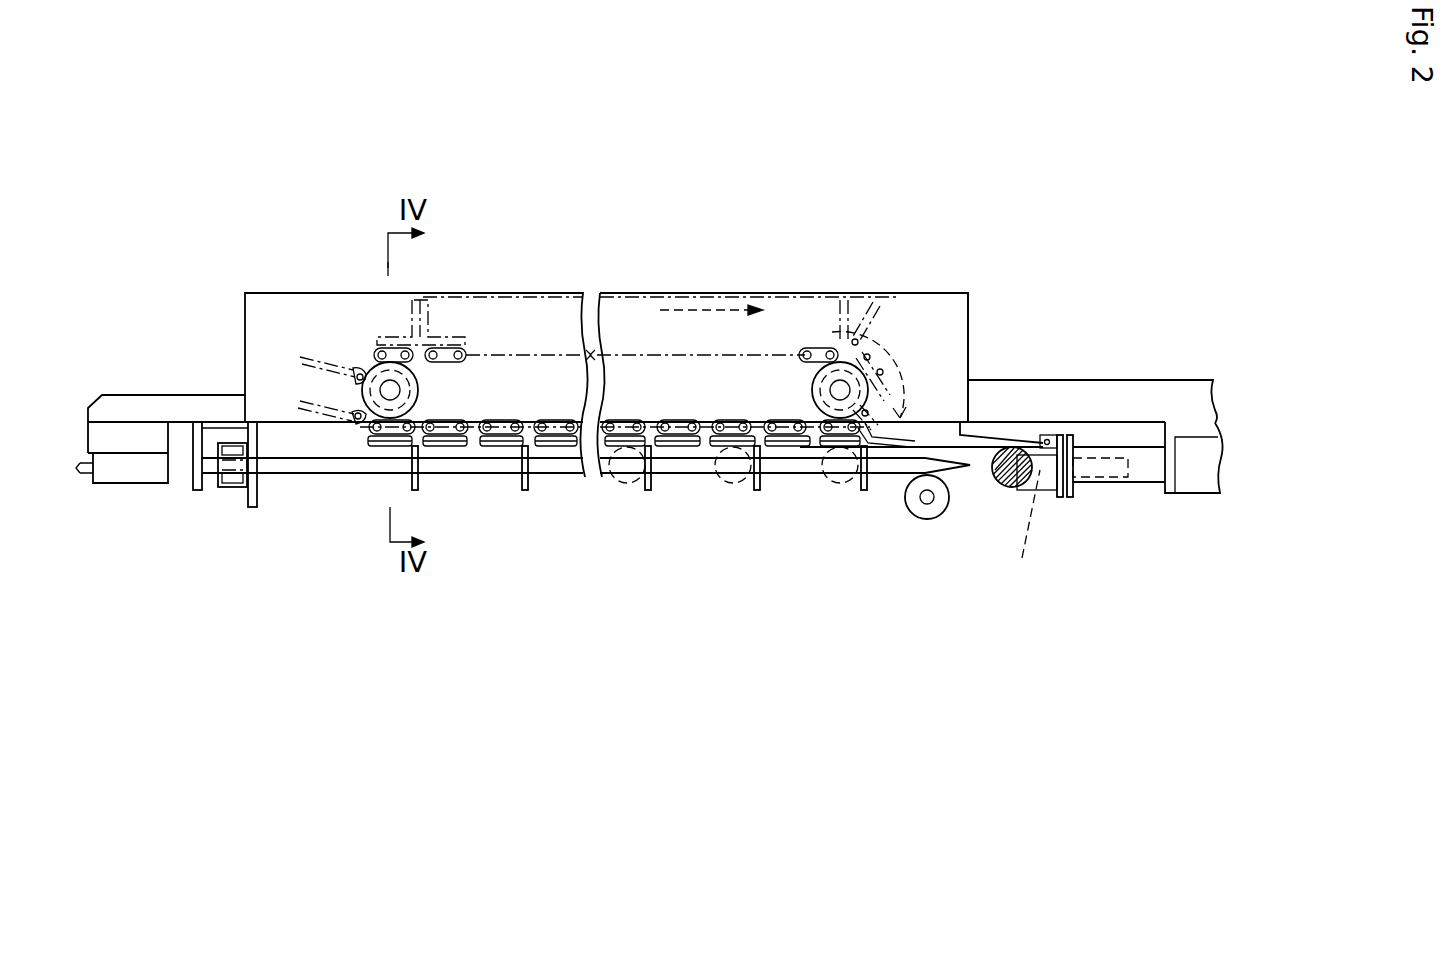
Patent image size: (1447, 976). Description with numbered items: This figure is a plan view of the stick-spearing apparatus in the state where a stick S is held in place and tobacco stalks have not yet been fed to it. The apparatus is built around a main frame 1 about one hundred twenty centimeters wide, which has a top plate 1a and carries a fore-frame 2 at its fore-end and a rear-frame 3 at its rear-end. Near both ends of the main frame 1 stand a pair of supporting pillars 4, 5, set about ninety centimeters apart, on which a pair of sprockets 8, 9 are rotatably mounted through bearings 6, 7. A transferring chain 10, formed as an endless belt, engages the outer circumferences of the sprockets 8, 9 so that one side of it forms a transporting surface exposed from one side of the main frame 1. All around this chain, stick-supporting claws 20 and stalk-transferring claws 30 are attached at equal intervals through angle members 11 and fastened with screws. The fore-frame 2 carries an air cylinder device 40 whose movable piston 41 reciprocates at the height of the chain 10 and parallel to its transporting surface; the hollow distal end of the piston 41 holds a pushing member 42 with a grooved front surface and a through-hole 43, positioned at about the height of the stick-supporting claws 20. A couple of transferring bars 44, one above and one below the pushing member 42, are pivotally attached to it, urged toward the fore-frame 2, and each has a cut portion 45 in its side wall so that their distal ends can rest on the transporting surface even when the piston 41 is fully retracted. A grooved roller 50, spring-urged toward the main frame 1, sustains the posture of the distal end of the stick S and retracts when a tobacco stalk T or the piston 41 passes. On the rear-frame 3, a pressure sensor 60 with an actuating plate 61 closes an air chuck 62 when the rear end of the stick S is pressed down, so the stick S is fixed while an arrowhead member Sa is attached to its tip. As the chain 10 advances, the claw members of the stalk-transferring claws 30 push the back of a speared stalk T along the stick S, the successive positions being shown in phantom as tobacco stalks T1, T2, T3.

The main frame 1 is at (562, 291).
The top plate 1a is at (952, 300).
The fore-frame 2 is at (1180, 380).
The rear-frame 3 is at (150, 395).
The supporting pillar 4 is at (840, 386).
The supporting pillar 5 is at (390, 390).
The bearing 6 is at (806, 390).
The bearing 7 is at (413, 397).
The sprocket 8 is at (808, 378).
The sprocket 9 is at (425, 374).
The transferring chain 10 is at (557, 422).
The angle member 11 is at (680, 433).
The stick-supporting claw 20 is at (452, 447).
The stalk-transferring claw 30 is at (383, 446).
The air cylinder device 40 is at (1203, 500).
The movable piston 41 is at (1142, 453).
The pushing member 42 is at (1045, 490).
The through-hole 43 is at (1019, 533).
The transferring bar 44 is at (983, 440).
The cut portion 45 is at (958, 428).
The grooved roller 50 is at (922, 512).
The pressure sensor 60 is at (120, 472).
The actuating plate 61 is at (192, 452).
The air chuck 62 is at (232, 490).
The stick S is at (684, 475).
The arrowhead member Sa is at (958, 478).
The tobacco stalk T is at (1005, 487).
The tobacco stalk T1 is at (612, 482).
The tobacco stalk T2 is at (722, 482).
The tobacco stalk T3 is at (835, 482).